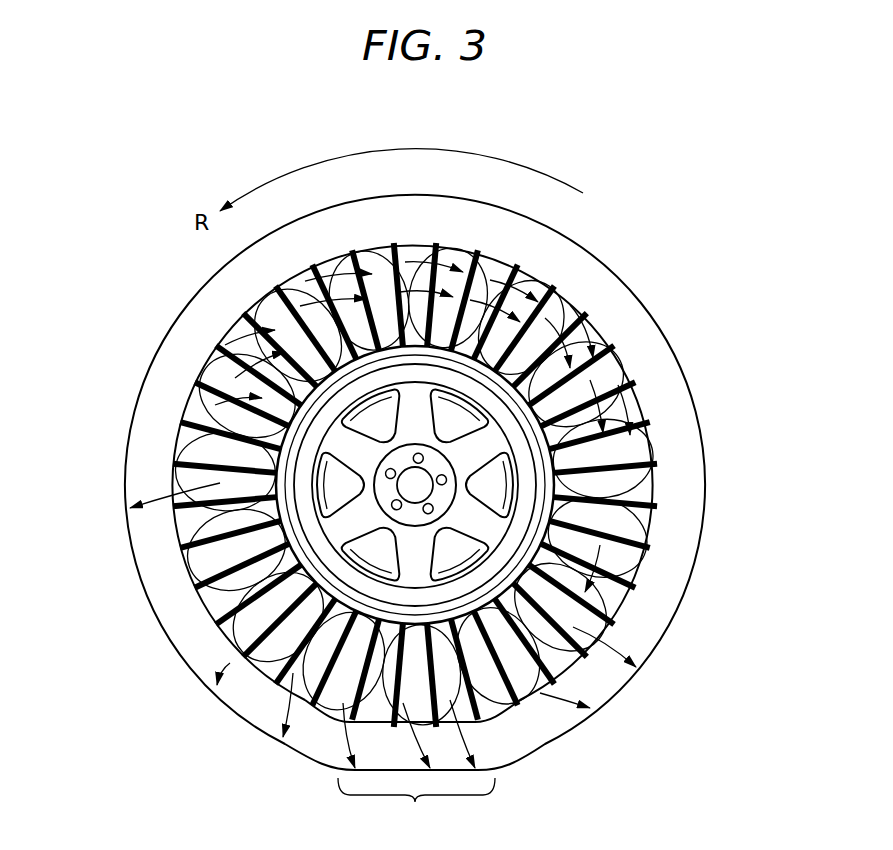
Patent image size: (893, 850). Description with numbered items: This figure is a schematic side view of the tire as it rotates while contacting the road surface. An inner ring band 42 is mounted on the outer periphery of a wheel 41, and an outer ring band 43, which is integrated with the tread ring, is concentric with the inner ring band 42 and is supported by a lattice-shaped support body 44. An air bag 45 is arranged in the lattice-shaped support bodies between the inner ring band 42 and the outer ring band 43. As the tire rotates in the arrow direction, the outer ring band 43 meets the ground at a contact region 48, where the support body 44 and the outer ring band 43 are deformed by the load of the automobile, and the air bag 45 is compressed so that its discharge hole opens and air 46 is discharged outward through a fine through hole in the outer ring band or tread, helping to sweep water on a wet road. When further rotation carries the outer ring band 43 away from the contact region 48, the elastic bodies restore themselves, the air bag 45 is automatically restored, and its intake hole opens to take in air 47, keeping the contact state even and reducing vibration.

The wheel 41 is at (305, 460).
The inner ring band 42 is at (200, 517).
The outer ring band 43 is at (633, 330).
The support body 44 is at (240, 316).
The air bag 45 is at (538, 290).
The air 46 is at (280, 710).
The air 47 is at (643, 570).
The contact region 48 is at (416, 804).